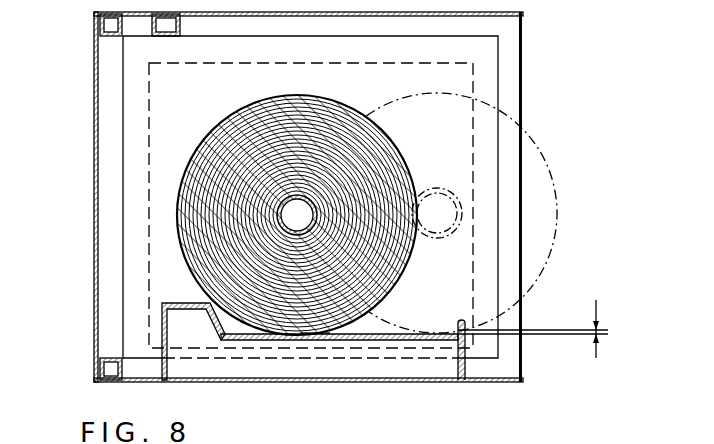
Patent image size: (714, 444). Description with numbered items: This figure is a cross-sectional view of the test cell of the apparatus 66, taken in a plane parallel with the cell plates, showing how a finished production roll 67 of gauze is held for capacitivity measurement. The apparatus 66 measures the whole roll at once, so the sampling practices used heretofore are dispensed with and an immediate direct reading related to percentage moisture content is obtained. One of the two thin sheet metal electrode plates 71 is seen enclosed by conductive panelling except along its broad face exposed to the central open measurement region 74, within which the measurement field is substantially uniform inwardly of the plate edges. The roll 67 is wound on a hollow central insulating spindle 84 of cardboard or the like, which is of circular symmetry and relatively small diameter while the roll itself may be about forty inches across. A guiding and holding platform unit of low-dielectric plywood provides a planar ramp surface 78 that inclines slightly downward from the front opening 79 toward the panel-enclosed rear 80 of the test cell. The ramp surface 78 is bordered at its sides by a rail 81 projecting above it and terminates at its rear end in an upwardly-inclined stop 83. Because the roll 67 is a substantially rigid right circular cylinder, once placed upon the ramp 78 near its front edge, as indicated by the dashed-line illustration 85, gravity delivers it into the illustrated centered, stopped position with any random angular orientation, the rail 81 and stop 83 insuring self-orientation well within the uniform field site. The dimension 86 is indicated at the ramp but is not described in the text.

The apparatus 66 is at (588, 79).
The finished production roll 67 is at (262, 112).
The electrode plate 71 is at (163, 88).
The central open measurement region 74 is at (338, 115).
The planar ramp surface 78 is at (322, 333).
The front opening 79 is at (519, 172).
The panel-enclosed rear 80 is at (95, 190).
The rail 81 is at (350, 336).
The upwardly-inclined stop 83 is at (213, 330).
The hollow central insulating spindle 84 is at (283, 200).
The dashed-line illustration 85 is at (545, 148).
The tray thickness dimension 86 is at (600, 313).